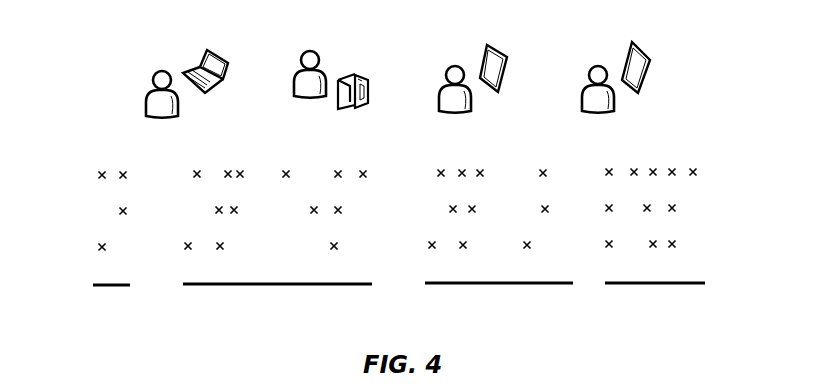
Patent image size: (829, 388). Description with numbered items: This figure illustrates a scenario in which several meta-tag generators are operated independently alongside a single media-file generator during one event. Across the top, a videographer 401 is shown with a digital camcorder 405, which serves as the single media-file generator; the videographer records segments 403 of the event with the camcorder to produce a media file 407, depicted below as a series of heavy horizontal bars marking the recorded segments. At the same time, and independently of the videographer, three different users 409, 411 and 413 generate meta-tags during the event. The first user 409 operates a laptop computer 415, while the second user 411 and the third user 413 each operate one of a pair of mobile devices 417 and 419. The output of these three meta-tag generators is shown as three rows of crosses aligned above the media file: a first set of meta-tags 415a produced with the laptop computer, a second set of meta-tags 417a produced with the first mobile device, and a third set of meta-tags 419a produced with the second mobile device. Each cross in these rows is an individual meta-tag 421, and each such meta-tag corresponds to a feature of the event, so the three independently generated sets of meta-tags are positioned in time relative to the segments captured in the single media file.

The videographer 401 is at (300, 56).
The segments 403 is at (269, 299).
The digital camcorder 405 is at (366, 104).
The media file 407 is at (370, 284).
The user 409 is at (150, 78).
The user 411 is at (446, 70).
The user 413 is at (590, 70).
The laptop computer 415 is at (200, 53).
The set of meta-tags 415a is at (364, 143).
The mobile device 417 is at (500, 92).
The set of meta-tags 417a is at (353, 210).
The mobile device 419 is at (646, 78).
The set of meta-tags 419a is at (353, 246).
The meta-tag 421 is at (97, 160).